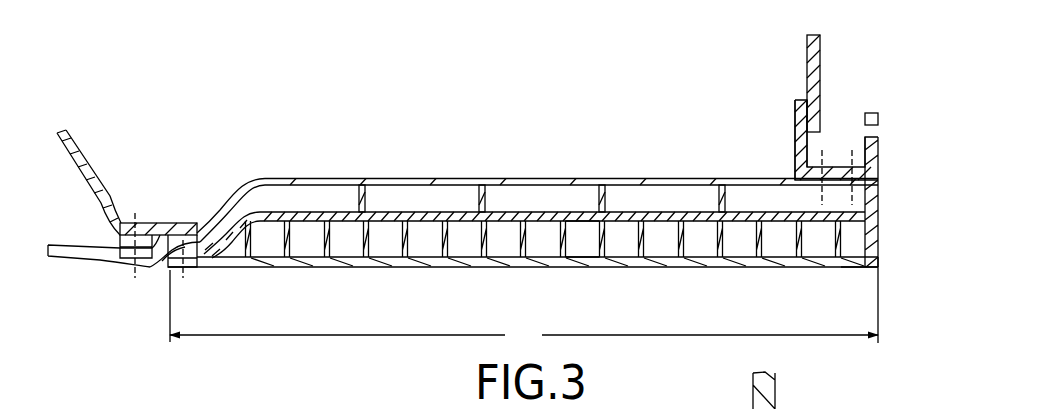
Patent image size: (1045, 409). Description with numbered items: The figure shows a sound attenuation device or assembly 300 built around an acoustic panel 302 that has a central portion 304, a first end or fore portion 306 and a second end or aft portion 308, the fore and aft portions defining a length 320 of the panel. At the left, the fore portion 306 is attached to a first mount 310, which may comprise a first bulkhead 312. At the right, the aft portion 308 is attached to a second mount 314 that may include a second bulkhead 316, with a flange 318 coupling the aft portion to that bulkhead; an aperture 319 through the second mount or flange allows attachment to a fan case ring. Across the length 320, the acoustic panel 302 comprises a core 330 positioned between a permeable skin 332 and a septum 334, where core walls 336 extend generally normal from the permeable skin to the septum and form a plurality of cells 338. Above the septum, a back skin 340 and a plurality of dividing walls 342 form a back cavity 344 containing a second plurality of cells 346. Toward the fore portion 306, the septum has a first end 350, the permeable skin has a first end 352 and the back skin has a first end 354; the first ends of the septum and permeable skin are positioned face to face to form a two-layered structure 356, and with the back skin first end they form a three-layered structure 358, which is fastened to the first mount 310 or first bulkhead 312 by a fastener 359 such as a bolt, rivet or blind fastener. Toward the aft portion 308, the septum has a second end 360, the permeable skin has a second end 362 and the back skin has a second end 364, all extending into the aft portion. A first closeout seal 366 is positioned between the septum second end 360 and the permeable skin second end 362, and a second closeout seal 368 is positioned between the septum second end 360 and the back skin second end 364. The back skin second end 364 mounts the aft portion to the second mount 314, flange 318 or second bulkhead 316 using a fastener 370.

The sound attenuation device or assembly 300 is at (88, 76).
The acoustic panel 302 is at (310, 170).
The central portion 304 is at (505, 160).
The first end or fore portion 306 is at (165, 196).
The second end or aft portion 308 is at (885, 155).
The first mount 310 is at (108, 194).
The first bulkhead 312 is at (63, 135).
The second mount 314 is at (790, 124).
The second bulkhead 316 is at (822, 60).
The flange 318 is at (796, 100).
The aperture 319 is at (876, 115).
The length 320 is at (524, 301).
The core 330 is at (283, 272).
The permeable skin 332 is at (395, 258).
The septum 334 is at (500, 230).
The core walls 336 is at (604, 242).
The cells 338 is at (580, 242).
The back skin 340 is at (674, 178).
The dividing walls 342 is at (600, 205).
The back cavity 344 is at (380, 170).
The second plurality of cells 346 is at (447, 202).
The first end of the septum 350 is at (204, 246).
The first end of the permeable skin 352 is at (195, 262).
The first end of the back skin 354 is at (206, 220).
The two-layered structure 356 is at (168, 258).
The three-layered structure 358 is at (150, 272).
The fastener 359 is at (178, 196).
The second end of the septum 360 is at (882, 226).
The second end of the permeable skin 362 is at (872, 266).
The second end of the back skin 364 is at (882, 181).
The first closeout seal 366 is at (880, 265).
The second closeout seal 368 is at (882, 208).
The fastener 370 is at (828, 155).